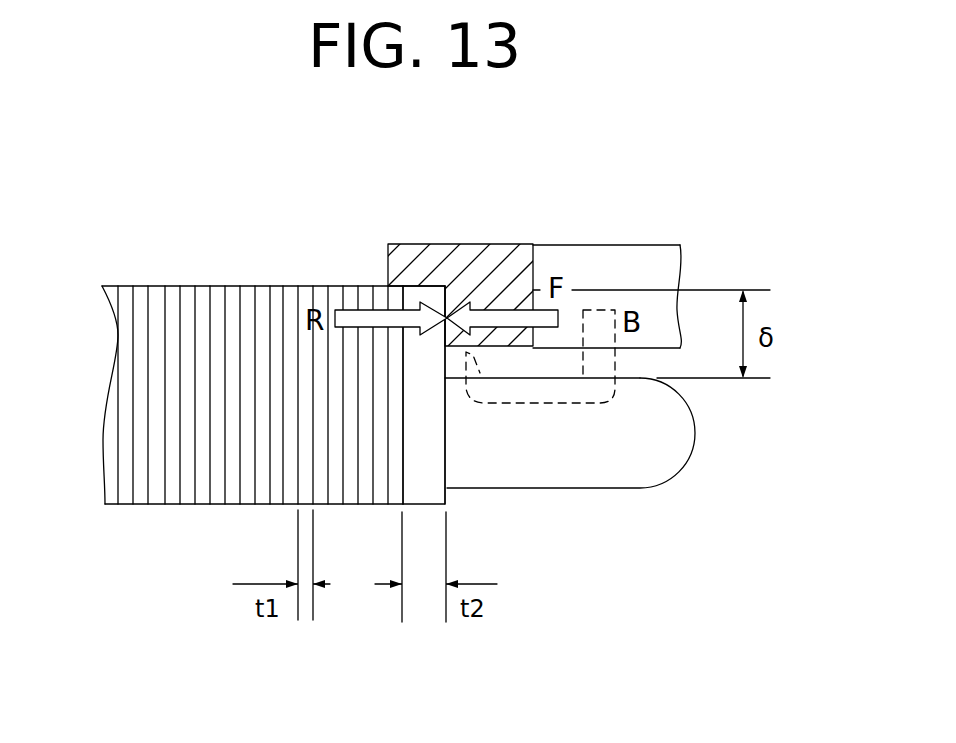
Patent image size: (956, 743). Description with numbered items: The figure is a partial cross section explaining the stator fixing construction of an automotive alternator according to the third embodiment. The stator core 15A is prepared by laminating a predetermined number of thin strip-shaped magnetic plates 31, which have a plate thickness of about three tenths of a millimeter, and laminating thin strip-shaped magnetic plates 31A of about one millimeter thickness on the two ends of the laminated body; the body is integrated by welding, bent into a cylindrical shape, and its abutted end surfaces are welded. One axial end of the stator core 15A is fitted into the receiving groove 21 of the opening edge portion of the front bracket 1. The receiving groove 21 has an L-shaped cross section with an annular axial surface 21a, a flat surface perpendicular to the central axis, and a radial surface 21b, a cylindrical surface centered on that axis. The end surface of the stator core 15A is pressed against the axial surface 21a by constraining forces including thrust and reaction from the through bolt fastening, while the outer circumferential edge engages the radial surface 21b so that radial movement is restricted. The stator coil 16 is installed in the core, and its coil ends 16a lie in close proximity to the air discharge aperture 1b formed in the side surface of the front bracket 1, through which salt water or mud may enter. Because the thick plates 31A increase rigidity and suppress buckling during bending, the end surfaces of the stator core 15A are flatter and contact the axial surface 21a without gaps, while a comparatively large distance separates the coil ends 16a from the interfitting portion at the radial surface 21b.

The front bracket 1 is at (674, 237).
The air discharge aperture 1b is at (607, 260).
The stator core 15A is at (198, 287).
The stator coil 16 is at (648, 506).
The coil end 16a is at (683, 448).
The receiving groove 21 is at (523, 170).
The axial surface 21a is at (482, 244).
The radial surface 21b is at (413, 244).
The thin strip-shaped magnetic plate 31 is at (157, 500).
The thin strip-shaped magnetic plate 31A is at (440, 467).